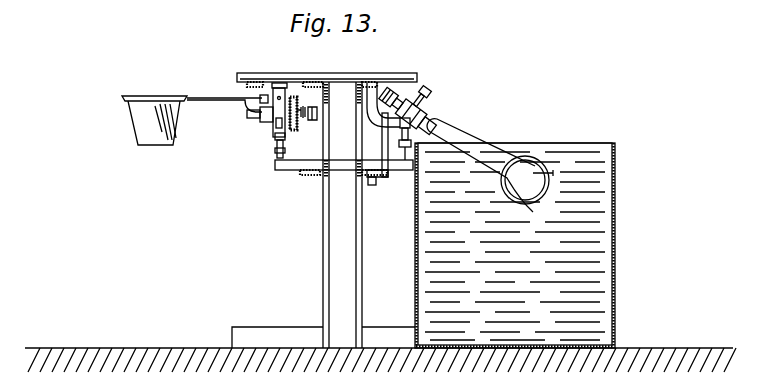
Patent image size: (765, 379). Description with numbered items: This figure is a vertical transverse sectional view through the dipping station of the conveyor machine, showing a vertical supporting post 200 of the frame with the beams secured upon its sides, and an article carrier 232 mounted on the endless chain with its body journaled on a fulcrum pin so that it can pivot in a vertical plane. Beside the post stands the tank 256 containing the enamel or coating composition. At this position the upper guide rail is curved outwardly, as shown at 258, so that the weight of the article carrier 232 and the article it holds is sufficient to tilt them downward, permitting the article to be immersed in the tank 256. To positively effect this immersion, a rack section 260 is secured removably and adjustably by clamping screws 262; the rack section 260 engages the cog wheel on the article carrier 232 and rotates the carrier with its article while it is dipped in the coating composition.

The supporting post 200 is at (337, 222).
The article carrier 232 is at (261, 134).
The tank 256 is at (615, 250).
The outwardly curved portion of upper guide rail 258 is at (433, 90).
The rack section 260 is at (373, 85).
The clamping screw 262 is at (373, 187).